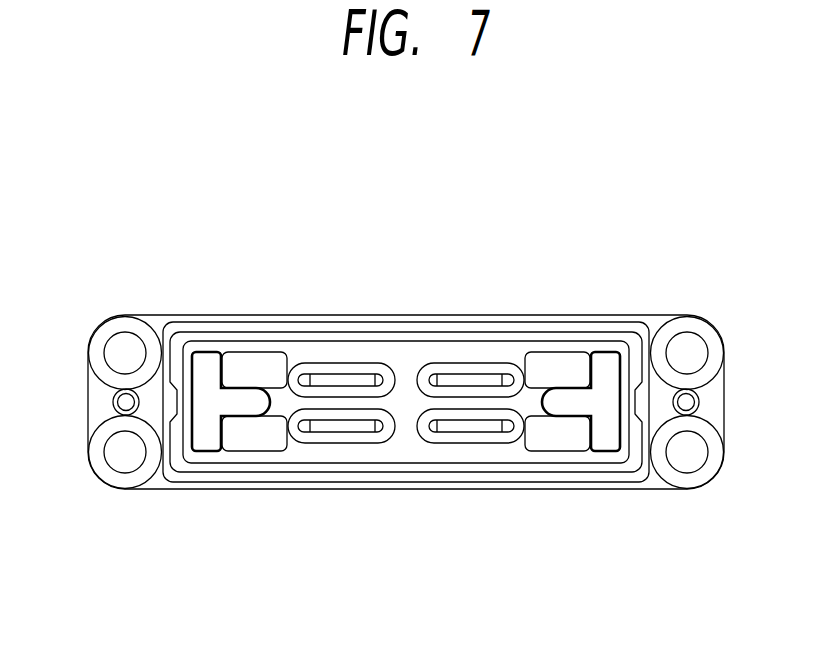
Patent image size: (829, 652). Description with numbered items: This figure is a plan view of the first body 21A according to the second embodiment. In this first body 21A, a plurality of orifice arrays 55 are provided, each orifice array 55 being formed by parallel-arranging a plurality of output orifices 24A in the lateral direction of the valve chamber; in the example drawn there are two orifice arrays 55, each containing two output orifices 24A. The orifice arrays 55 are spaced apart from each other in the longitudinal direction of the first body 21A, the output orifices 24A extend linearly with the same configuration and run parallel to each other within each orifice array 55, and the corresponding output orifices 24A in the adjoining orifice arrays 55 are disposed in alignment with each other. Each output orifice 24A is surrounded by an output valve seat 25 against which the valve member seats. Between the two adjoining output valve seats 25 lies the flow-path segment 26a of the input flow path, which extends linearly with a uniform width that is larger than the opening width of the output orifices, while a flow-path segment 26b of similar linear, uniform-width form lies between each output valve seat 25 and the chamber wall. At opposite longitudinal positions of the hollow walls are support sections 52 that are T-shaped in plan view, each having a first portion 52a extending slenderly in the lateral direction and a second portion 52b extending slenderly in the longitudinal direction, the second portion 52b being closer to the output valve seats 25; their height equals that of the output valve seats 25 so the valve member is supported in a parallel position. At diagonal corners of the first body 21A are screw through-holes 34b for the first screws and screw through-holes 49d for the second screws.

The first body 21A is at (195, 316).
The output orifice 24A is at (340, 380).
The output valve seat 25 is at (365, 370).
The flow-path segment 26a is at (418, 387).
The flow-path segment 26b is at (457, 350).
The screw through-hole 34b is at (687, 352).
The screw through-hole 49d is at (124, 352).
The support section 52 is at (384, 487).
The first portion 52a is at (210, 440).
The second portion 52b is at (257, 402).
The orifice array 55 is at (362, 483).